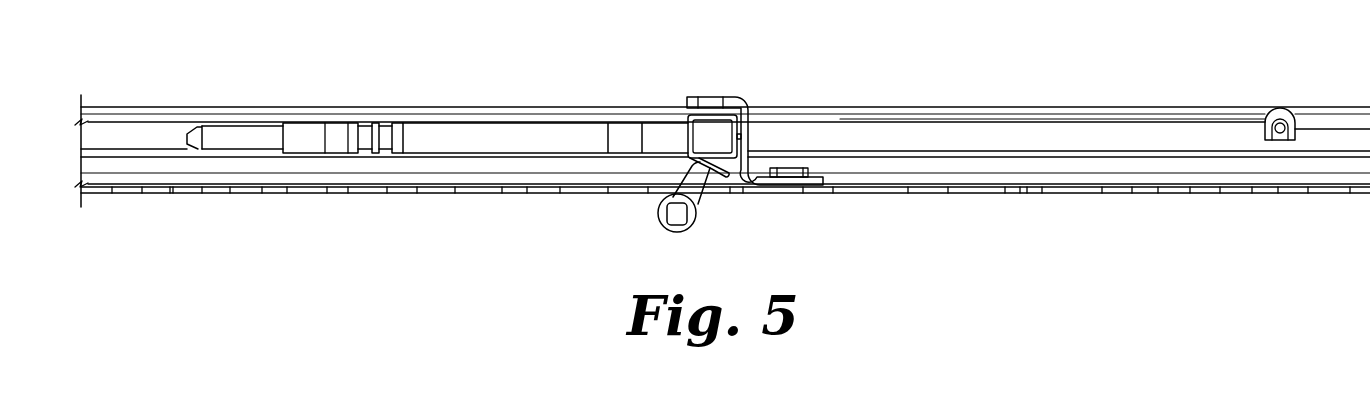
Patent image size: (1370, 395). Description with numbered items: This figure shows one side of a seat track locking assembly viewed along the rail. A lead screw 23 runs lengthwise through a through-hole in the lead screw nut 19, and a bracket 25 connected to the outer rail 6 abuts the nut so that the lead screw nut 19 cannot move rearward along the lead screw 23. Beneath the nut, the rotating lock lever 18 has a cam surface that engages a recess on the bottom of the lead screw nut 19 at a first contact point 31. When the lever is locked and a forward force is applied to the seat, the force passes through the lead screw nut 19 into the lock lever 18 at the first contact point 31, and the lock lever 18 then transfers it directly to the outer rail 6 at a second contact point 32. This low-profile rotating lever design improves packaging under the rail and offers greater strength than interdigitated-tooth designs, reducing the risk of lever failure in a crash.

The outer rail 6 is at (1203, 195).
The lock lever 18 is at (698, 200).
The lead screw nut 19 is at (689, 137).
The lead screw 23 is at (502, 150).
The bracket 25 is at (742, 102).
The first contact point 31 is at (707, 158).
The second contact point 32 is at (670, 200).